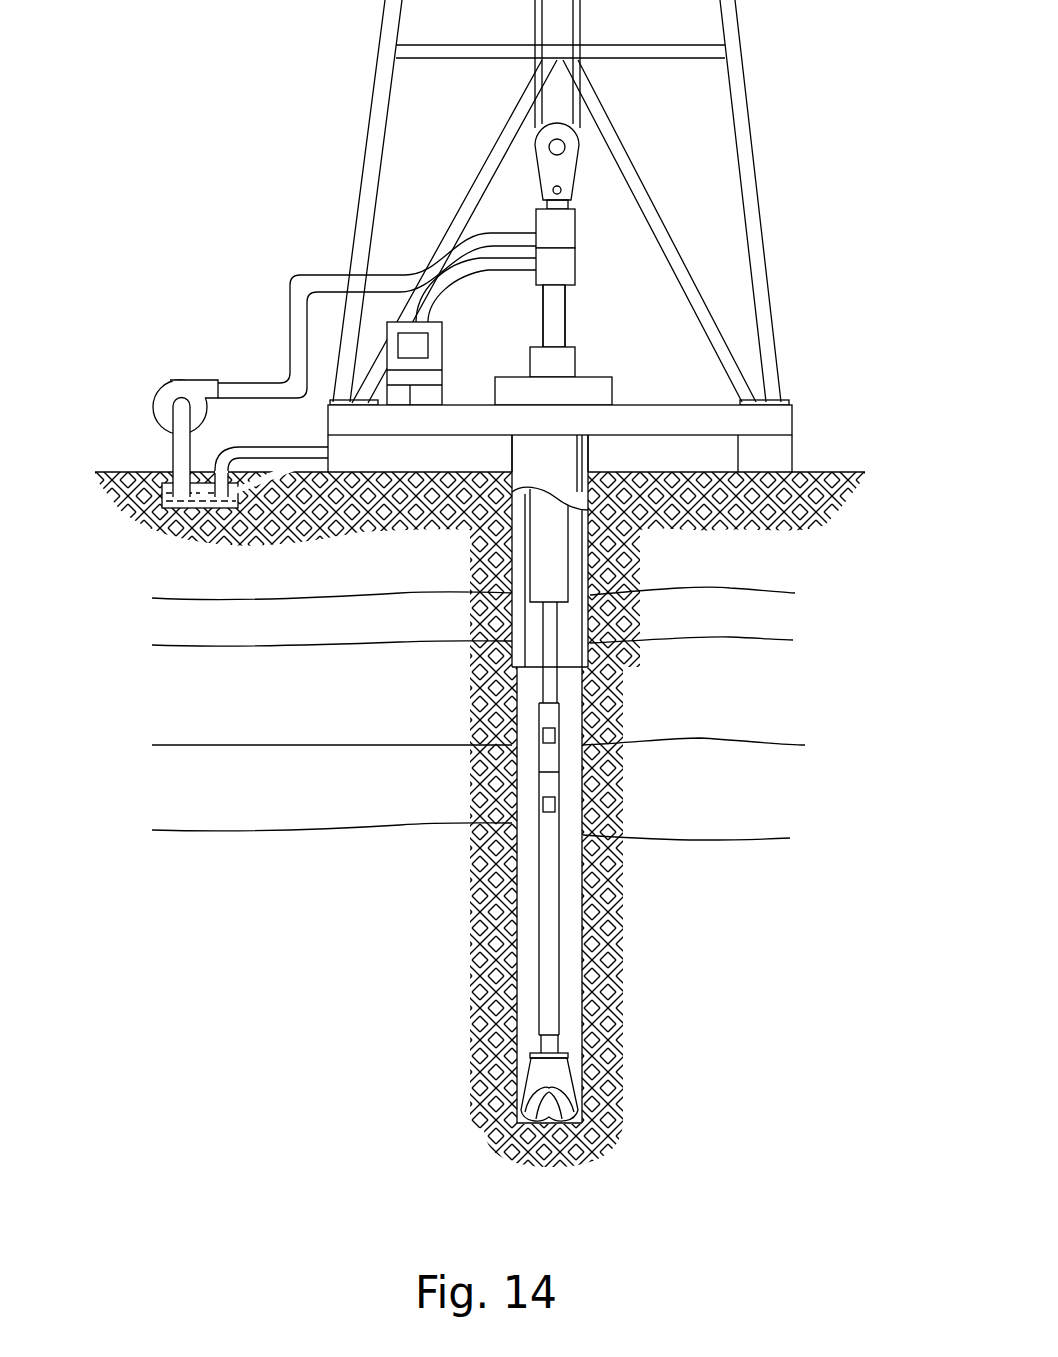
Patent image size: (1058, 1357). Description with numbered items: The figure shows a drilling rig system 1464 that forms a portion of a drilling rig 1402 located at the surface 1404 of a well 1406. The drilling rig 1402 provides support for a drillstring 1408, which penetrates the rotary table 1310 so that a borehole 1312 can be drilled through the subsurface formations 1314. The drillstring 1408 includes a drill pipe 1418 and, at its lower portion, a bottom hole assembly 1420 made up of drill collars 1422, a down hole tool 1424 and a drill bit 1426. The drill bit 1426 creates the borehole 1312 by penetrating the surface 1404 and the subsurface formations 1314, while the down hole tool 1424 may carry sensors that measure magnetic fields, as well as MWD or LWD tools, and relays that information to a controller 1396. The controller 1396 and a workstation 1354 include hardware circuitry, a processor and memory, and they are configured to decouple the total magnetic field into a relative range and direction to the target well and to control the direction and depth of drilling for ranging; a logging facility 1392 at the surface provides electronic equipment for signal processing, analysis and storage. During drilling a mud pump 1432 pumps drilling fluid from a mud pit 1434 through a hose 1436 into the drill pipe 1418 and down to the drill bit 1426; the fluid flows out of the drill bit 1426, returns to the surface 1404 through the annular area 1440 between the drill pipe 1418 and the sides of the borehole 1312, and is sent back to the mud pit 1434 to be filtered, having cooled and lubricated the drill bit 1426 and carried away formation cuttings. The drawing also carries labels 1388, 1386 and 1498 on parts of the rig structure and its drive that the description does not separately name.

The drilling rig system 1464 is at (242, 82).
The derrick 1388 is at (743, 66).
The drilling rig 1402 is at (764, 185).
The hose 1436 is at (302, 275).
The logging facility 1392 is at (432, 315).
The workstation 1354 is at (443, 337).
The rotary table 1310 is at (512, 377).
The drive shaft 1498 is at (575, 363).
The controller 1396 is at (430, 345).
The mud pump 1432 is at (188, 380).
The rig floor 1386 is at (792, 414).
The surface 1404 is at (815, 472).
The well 1406 is at (596, 467).
The mud pit 1434 is at (185, 500).
The drill collars 1422 is at (568, 558).
The drill pipe 1418 is at (550, 640).
The subsurface formations 1314 is at (123, 598).
The annular area 1440 is at (573, 710).
The bottom hole assembly 1420 is at (467, 661).
The drillstring 1408 is at (565, 896).
The borehole 1312 is at (583, 982).
The down hole tool 1424 is at (550, 1013).
The drill bit 1426 is at (557, 1077).